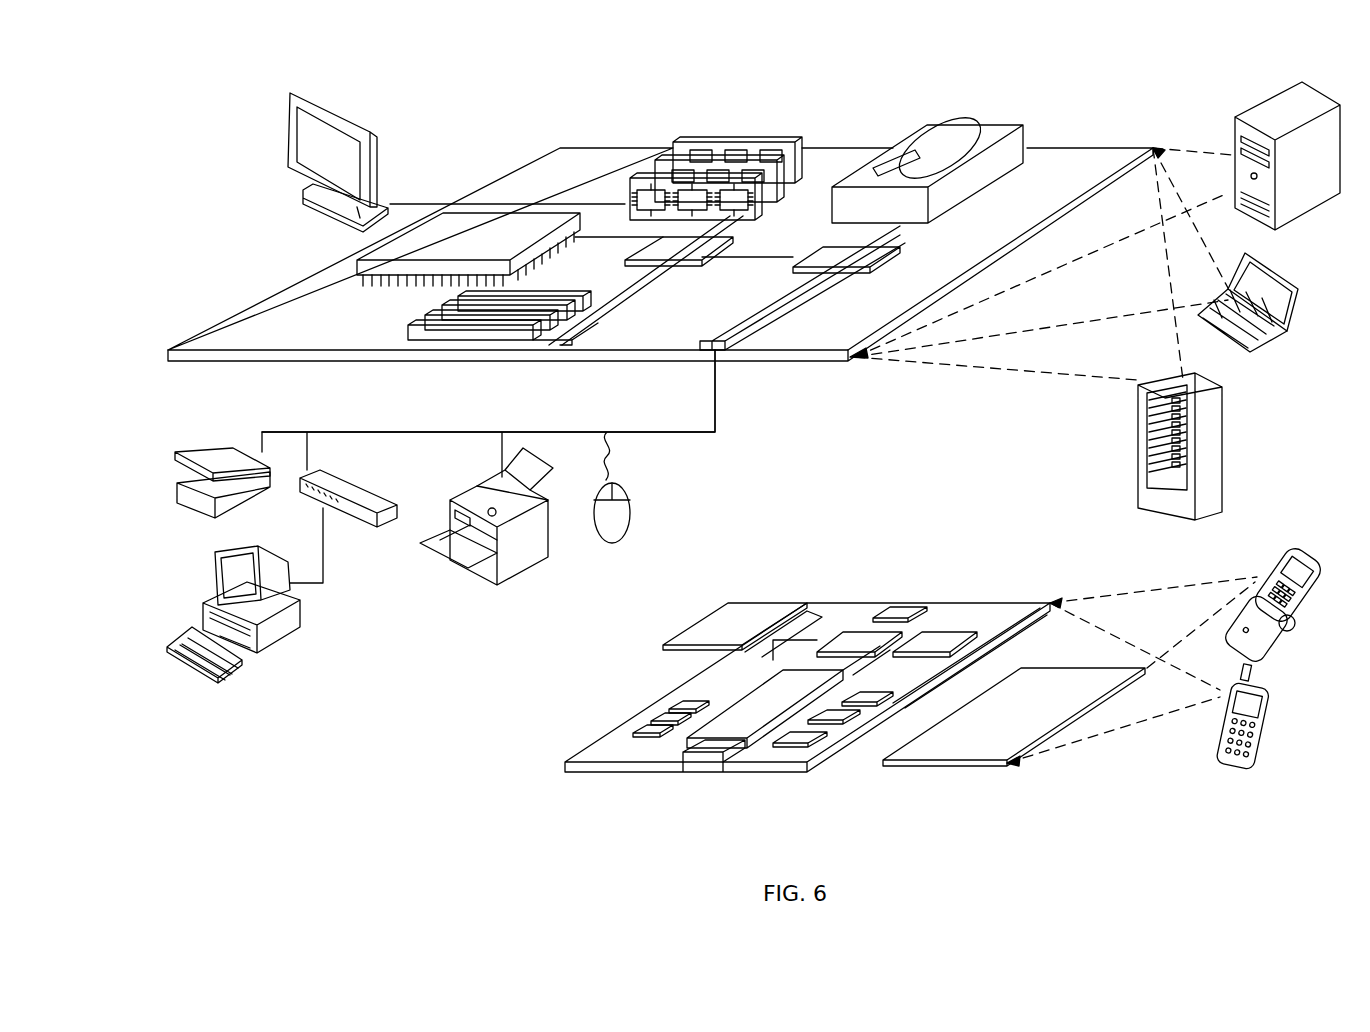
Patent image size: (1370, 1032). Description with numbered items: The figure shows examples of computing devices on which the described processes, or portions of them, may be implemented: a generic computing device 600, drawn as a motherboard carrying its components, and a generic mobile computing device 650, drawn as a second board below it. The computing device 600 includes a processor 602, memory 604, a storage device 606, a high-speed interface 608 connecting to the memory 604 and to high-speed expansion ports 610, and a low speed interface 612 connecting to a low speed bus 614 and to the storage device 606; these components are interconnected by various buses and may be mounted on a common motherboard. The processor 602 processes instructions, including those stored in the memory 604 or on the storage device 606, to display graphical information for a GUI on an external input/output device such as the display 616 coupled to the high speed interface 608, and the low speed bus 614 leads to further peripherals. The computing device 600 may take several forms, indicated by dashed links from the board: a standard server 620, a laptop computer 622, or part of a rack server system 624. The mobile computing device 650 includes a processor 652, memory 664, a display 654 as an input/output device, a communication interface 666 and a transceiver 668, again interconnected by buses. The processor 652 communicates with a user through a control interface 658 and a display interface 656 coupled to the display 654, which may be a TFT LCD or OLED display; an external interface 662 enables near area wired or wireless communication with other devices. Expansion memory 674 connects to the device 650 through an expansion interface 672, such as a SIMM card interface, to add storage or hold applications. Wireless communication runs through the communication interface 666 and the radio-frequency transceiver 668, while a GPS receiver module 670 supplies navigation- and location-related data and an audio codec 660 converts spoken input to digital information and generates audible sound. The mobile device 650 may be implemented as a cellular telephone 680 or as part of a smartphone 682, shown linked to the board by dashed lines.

The computing device 600 is at (484, 118).
The processor 602 is at (357, 266).
The memory 604 is at (692, 143).
The storage device 606 is at (924, 132).
The high-speed interface 608 is at (643, 244).
The high-speed expansion ports 610 is at (427, 322).
The low speed interface 612 is at (830, 250).
The low speed bus 614 is at (733, 350).
The display 616 is at (297, 100).
The standard server 620 is at (1235, 136).
The laptop computer 622 is at (1298, 280).
The rack server system 624 is at (1140, 470).
The mobile computing device 650 is at (540, 776).
The processor 652 is at (740, 730).
The display 654 is at (974, 748).
The display interface 656 is at (806, 742).
The control interface 658 is at (845, 718).
The audio codec 660 is at (868, 698).
The external interface 662 is at (705, 774).
The memory 664 is at (644, 722).
The communication interface 666 is at (860, 638).
The transceiver 668 is at (938, 640).
The GPS receiver module 670 is at (910, 604).
The expansion interface 672 is at (790, 613).
The expansion memory 674 is at (718, 628).
The cellular telephone 680 is at (1278, 556).
The smartphone 682 is at (1220, 728).